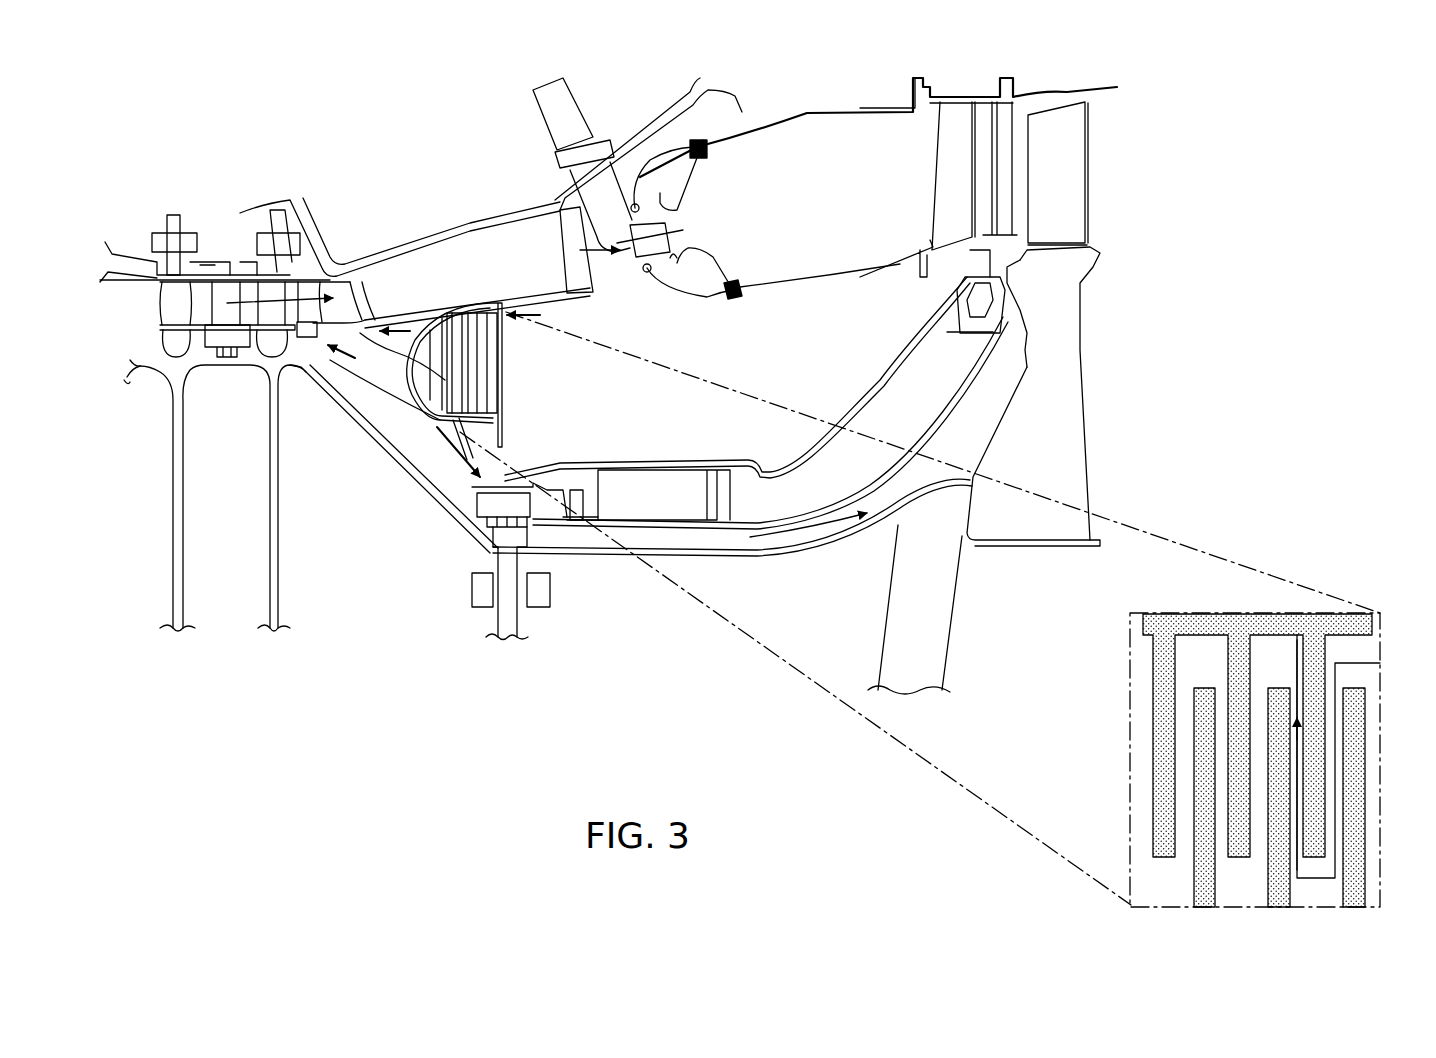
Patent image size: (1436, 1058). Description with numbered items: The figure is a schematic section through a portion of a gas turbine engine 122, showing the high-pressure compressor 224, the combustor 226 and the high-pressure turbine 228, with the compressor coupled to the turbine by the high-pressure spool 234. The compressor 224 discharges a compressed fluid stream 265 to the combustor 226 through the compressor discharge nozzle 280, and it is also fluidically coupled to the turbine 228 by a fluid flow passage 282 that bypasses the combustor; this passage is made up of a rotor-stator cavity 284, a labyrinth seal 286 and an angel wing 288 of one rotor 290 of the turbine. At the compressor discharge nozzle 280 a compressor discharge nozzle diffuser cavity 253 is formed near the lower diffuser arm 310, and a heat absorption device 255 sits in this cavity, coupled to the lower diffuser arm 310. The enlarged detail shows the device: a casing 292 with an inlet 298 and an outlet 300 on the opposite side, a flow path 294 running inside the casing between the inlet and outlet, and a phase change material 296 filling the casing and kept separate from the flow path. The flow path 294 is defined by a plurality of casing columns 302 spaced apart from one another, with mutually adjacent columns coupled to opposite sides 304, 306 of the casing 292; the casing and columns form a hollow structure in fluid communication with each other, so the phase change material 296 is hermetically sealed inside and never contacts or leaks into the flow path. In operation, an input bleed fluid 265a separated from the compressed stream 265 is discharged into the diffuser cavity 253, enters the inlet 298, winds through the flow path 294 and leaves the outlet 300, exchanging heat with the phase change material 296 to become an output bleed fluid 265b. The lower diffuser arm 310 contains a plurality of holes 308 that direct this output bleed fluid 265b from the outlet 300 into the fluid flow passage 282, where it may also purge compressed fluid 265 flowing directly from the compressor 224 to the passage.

The gas turbine engine 122 is at (183, 95).
The high-pressure compressor 224 is at (160, 384).
The combustor 226 is at (755, 128).
The high-pressure turbine 228 is at (1000, 555).
The high-pressure spool 234 is at (590, 550).
The compressor discharge nozzle diffuser cavity 253 is at (372, 270).
The heat absorption device 255 is at (393, 275).
The compressed fluid stream 265 is at (233, 297).
The input bleed fluid 265a is at (540, 315).
The output bleed fluid 265b is at (370, 360).
The compressor discharge nozzle 280 is at (500, 290).
The fluid flow passage 282 is at (451, 468).
The rotor-stator cavity 284 is at (380, 360).
The labyrinth seal 286 is at (487, 522).
The angel wing 288 is at (1030, 275).
The rotor 290 is at (1072, 167).
The casing 292 is at (1180, 613).
The flow path 294 is at (1342, 628).
The phase change material 296 is at (1200, 707).
The inlet 298 is at (495, 323).
The outlet 300 is at (393, 410).
The casing columns 302 is at (1213, 863).
The side of the casing 304 is at (423, 317).
The side of the casing 306 is at (505, 425).
The holes 308 is at (367, 360).
The lower diffuser arm 310 is at (417, 440).